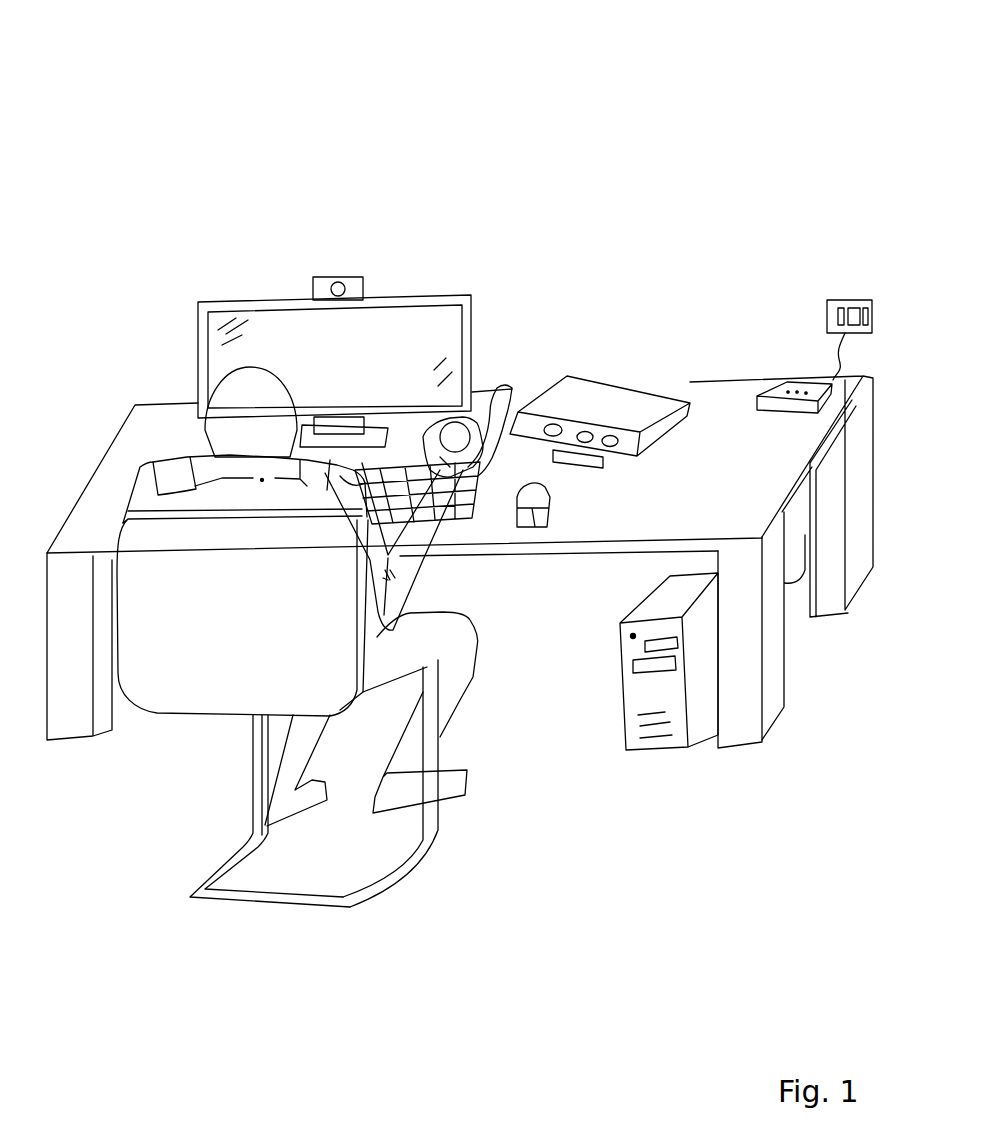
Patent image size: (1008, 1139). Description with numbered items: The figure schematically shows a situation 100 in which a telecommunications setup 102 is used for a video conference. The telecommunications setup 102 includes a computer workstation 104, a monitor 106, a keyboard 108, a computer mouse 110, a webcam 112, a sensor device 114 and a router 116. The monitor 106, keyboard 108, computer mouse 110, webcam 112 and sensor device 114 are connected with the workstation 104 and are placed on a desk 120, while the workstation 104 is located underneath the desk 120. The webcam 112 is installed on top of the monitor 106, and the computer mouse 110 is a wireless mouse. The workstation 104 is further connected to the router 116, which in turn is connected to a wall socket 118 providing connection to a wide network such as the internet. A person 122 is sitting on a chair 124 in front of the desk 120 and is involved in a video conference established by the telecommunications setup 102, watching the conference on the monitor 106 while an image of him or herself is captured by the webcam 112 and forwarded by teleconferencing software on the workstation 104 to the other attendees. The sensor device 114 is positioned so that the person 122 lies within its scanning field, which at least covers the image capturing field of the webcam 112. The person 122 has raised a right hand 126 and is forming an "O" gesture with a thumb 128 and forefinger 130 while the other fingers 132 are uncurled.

The situation 100 is at (790, 30).
The telecommunications setup 102 is at (150, 332).
The computer workstation 104 is at (633, 700).
The monitor 106 is at (270, 324).
The keyboard 108 is at (458, 508).
The computer mouse 110 is at (530, 527).
The webcam 112 is at (360, 281).
The sensor device 114 is at (598, 384).
The router 116 is at (798, 390).
The wall socket 118 is at (845, 300).
The desk 120 is at (827, 603).
The person 122 is at (167, 444).
The chair 124 is at (158, 710).
The right hand 126 is at (457, 467).
The thumb 128 is at (425, 445).
The forefinger 130 is at (457, 414).
The other fingers 132 is at (492, 395).